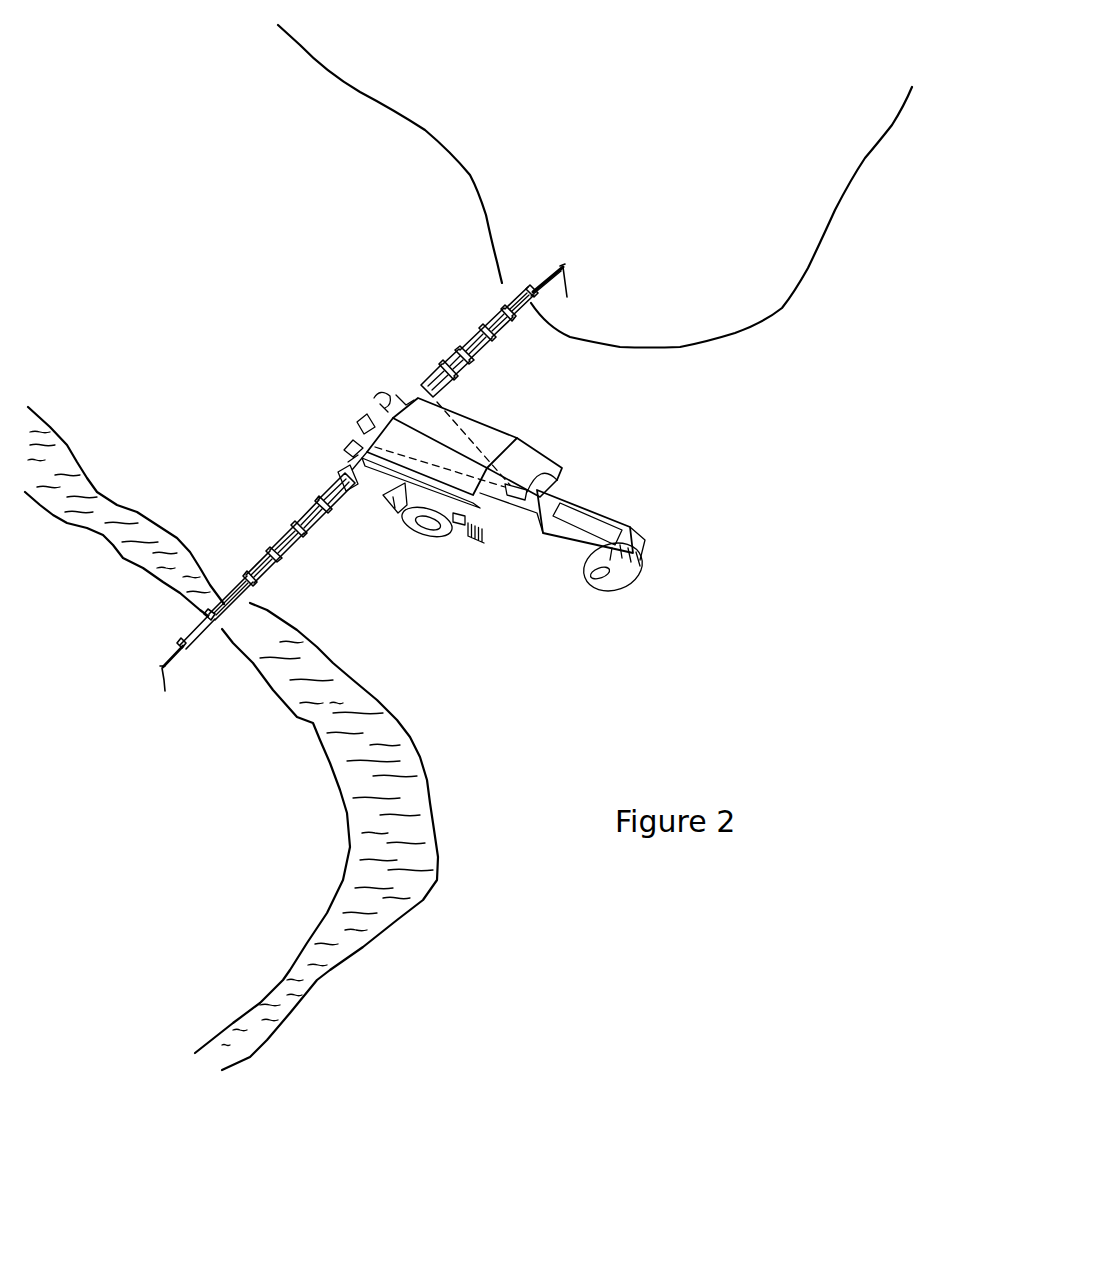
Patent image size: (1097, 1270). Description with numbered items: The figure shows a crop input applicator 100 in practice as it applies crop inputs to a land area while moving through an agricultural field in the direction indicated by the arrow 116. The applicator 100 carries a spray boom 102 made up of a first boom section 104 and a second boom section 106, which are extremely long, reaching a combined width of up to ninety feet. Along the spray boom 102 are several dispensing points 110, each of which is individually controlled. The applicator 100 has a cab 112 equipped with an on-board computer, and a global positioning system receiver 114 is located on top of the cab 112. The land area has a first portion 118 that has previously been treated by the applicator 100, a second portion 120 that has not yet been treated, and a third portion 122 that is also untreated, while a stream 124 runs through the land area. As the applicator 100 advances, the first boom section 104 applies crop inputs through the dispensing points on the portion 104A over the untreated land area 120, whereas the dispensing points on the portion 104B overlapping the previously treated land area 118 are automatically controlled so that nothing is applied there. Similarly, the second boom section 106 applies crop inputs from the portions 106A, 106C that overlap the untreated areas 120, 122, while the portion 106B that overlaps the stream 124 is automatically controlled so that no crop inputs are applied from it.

The crop input applicator 100 is at (567, 443).
The spray boom 102 is at (578, 263).
The first boom section 104 is at (513, 333).
The portion of the boom section over untreated land 104A is at (455, 329).
The portion of the boom overlapping previously treated land 104B is at (553, 257).
The second boom section 106 is at (220, 650).
The portion of the boom overlapping untreated area 106A is at (333, 466).
The portion of the boom overlapping the stream 106B is at (243, 622).
The portion of the boom overlapping untreated area 106C is at (192, 620).
The dispensing points 110 is at (491, 336).
The cab 112 is at (525, 535).
The global positioning system receiver 114 is at (558, 472).
The arrow 116 is at (645, 572).
The first portion of the land area 118 is at (567, 34).
The second portion of the land area 120 is at (762, 517).
The third portion of the land area 122 is at (145, 912).
The stream 124 is at (413, 803).